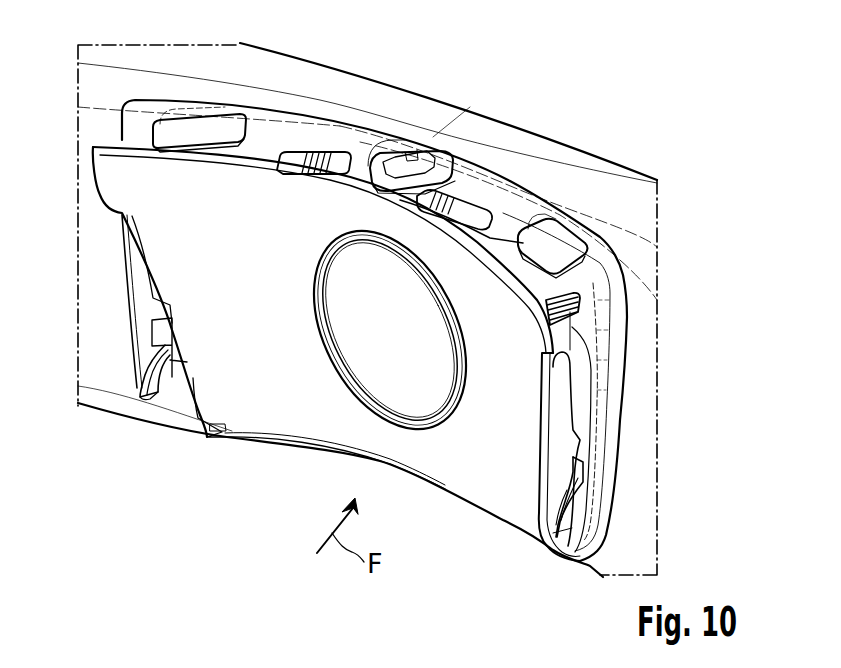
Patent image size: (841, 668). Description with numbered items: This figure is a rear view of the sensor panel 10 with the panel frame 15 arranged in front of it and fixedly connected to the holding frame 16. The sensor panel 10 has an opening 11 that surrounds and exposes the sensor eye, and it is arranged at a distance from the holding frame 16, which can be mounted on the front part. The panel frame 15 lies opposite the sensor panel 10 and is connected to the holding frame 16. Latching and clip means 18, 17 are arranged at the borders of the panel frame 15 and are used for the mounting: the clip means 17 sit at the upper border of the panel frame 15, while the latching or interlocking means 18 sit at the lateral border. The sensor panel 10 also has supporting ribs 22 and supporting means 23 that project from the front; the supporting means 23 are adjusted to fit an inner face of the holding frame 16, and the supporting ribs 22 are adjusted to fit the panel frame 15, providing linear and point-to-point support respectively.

The sensor panel 10 is at (283, 428).
The opening 11 is at (402, 344).
The panel frame 15 is at (497, 237).
The holding frame 16 is at (102, 90).
The clip means 17 is at (192, 128).
The latching or interlocking means 18 is at (162, 397).
The supporting ribs 22 is at (563, 377).
The supporting means 23 is at (360, 177).